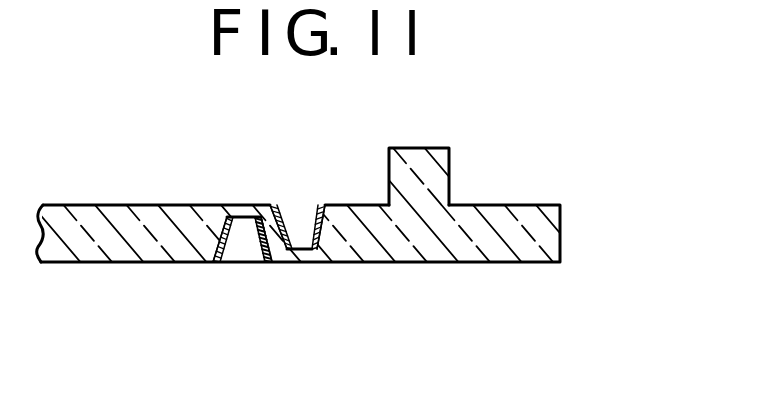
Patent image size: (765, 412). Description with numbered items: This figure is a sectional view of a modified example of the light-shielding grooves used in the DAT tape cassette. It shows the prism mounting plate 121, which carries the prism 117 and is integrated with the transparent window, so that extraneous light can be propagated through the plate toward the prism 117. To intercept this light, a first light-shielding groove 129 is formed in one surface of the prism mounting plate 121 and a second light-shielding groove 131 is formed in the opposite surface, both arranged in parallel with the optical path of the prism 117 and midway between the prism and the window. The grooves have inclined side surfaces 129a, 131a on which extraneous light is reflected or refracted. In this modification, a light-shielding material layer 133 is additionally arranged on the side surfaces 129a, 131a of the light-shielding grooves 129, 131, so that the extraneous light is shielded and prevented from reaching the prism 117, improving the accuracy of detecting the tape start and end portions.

The prism 117 is at (420, 147).
The prism mounting plate 121 is at (541, 240).
The first light-shielding groove 129 is at (302, 250).
The inclined surface of first light-shielding groove 129a is at (320, 214).
The second light-shielding groove 131 is at (248, 217).
The inclined surface of second light-shielding groove 131a is at (237, 263).
The light-shielding material layer 133 is at (285, 215).